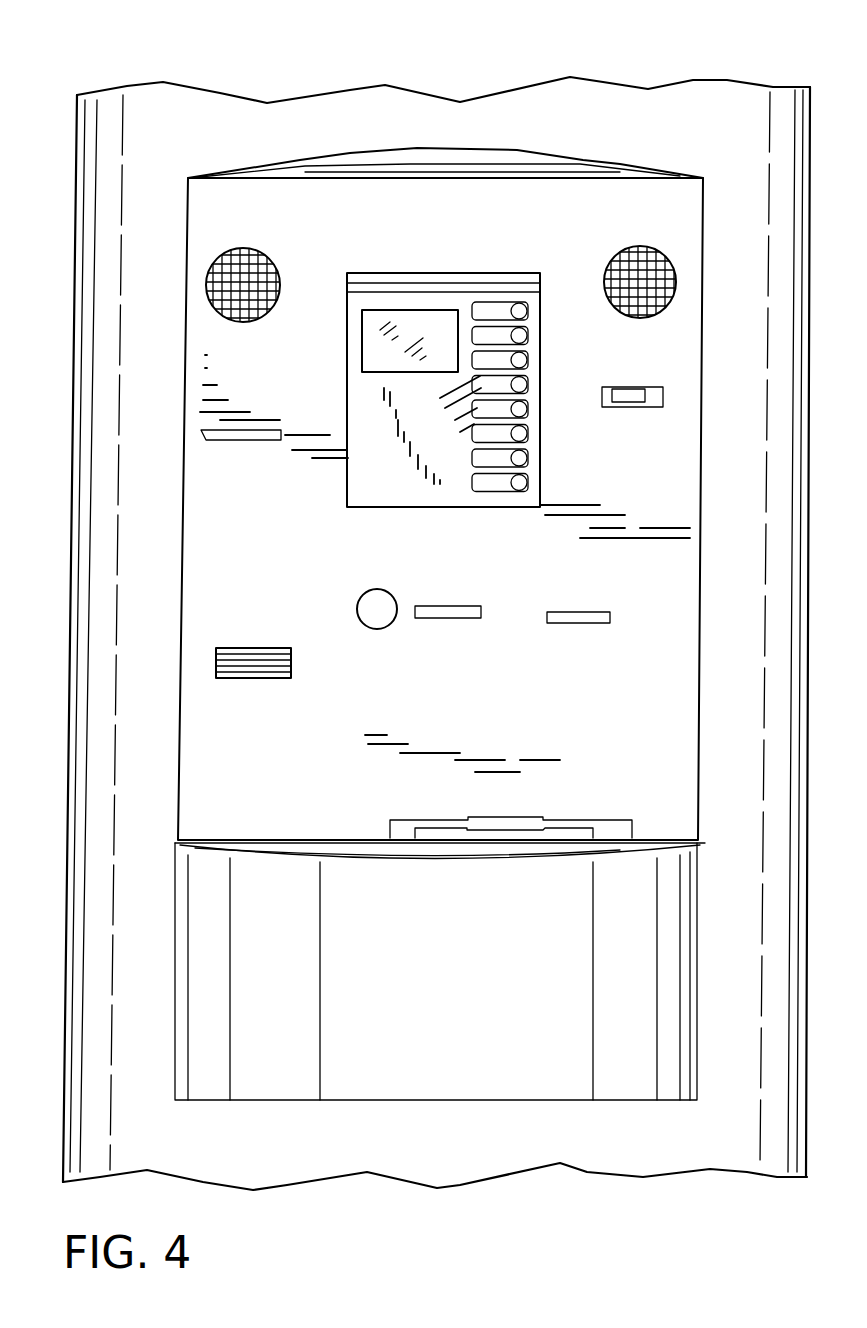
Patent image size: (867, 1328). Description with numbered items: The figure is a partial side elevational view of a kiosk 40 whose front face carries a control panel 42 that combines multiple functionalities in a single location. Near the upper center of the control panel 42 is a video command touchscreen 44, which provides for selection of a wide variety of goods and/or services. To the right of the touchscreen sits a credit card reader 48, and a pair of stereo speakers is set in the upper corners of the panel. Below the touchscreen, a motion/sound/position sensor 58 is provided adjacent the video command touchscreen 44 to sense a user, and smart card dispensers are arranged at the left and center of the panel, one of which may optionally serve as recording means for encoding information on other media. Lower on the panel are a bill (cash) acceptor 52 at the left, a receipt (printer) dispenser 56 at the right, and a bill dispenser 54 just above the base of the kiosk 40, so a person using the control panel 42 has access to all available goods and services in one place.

The kiosk 40 is at (660, 75).
The control panel 42 is at (703, 522).
The video command touchscreen 44 is at (530, 345).
The credit card reader 48 is at (663, 396).
The bill (cash) acceptor 52 is at (262, 682).
The bill dispenser 54 is at (560, 817).
The receipt (printer) dispenser 56 is at (577, 624).
The motion/sound/position sensor 58 is at (357, 610).